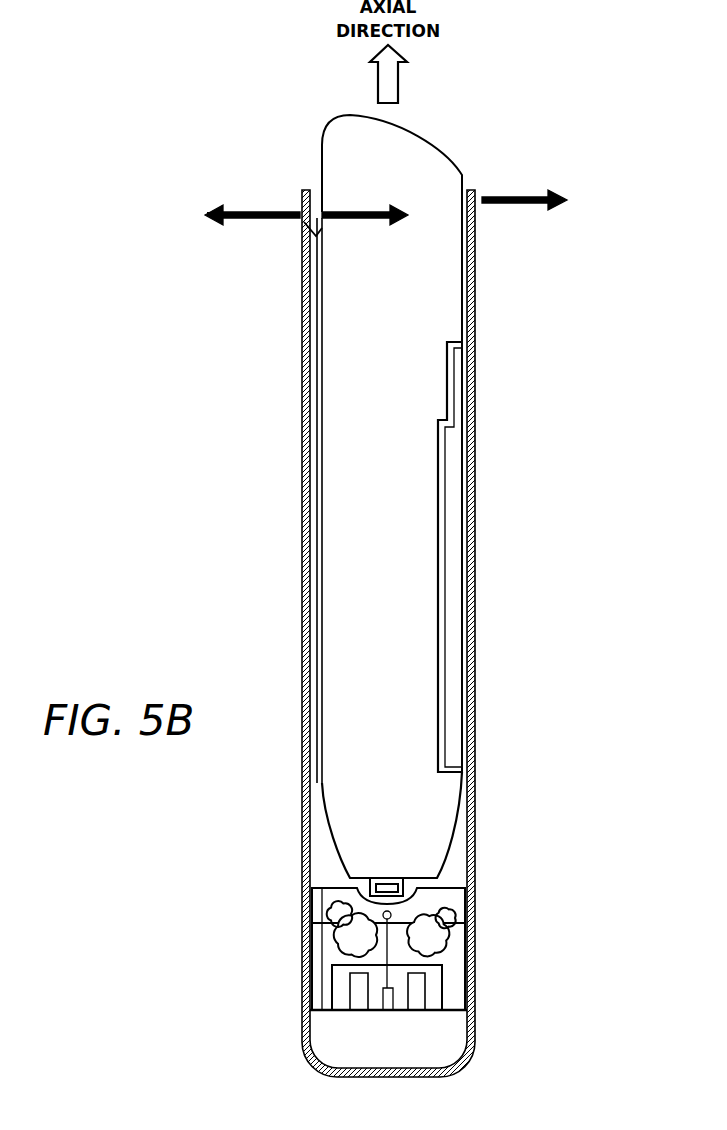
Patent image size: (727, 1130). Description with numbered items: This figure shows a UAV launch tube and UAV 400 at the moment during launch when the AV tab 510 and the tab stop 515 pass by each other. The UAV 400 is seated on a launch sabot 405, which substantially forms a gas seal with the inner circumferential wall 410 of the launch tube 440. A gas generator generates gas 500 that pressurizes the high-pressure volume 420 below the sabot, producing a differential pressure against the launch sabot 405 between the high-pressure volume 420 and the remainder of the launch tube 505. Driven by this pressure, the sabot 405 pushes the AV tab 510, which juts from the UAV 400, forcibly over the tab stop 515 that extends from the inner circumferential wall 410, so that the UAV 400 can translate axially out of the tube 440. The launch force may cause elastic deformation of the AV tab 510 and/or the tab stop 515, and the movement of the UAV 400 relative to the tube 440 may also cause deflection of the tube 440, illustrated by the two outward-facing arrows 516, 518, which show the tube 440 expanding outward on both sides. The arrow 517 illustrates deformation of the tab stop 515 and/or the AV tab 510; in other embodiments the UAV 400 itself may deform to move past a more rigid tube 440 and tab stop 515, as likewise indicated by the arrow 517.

The UAV 400 is at (412, 835).
The launch sabot 405 is at (323, 900).
The inner circumferential wall 410 is at (467, 265).
The high-pressure volume 420 is at (452, 986).
The launch tube 440 is at (305, 385).
The gas 500 is at (428, 932).
The remainder of the launch tube 505 is at (328, 949).
The AV tab 510 is at (317, 211).
The tab stop 515 is at (309, 226).
The arrow 516 is at (240, 210).
The arrow 517 is at (347, 213).
The arrow 518 is at (498, 195).